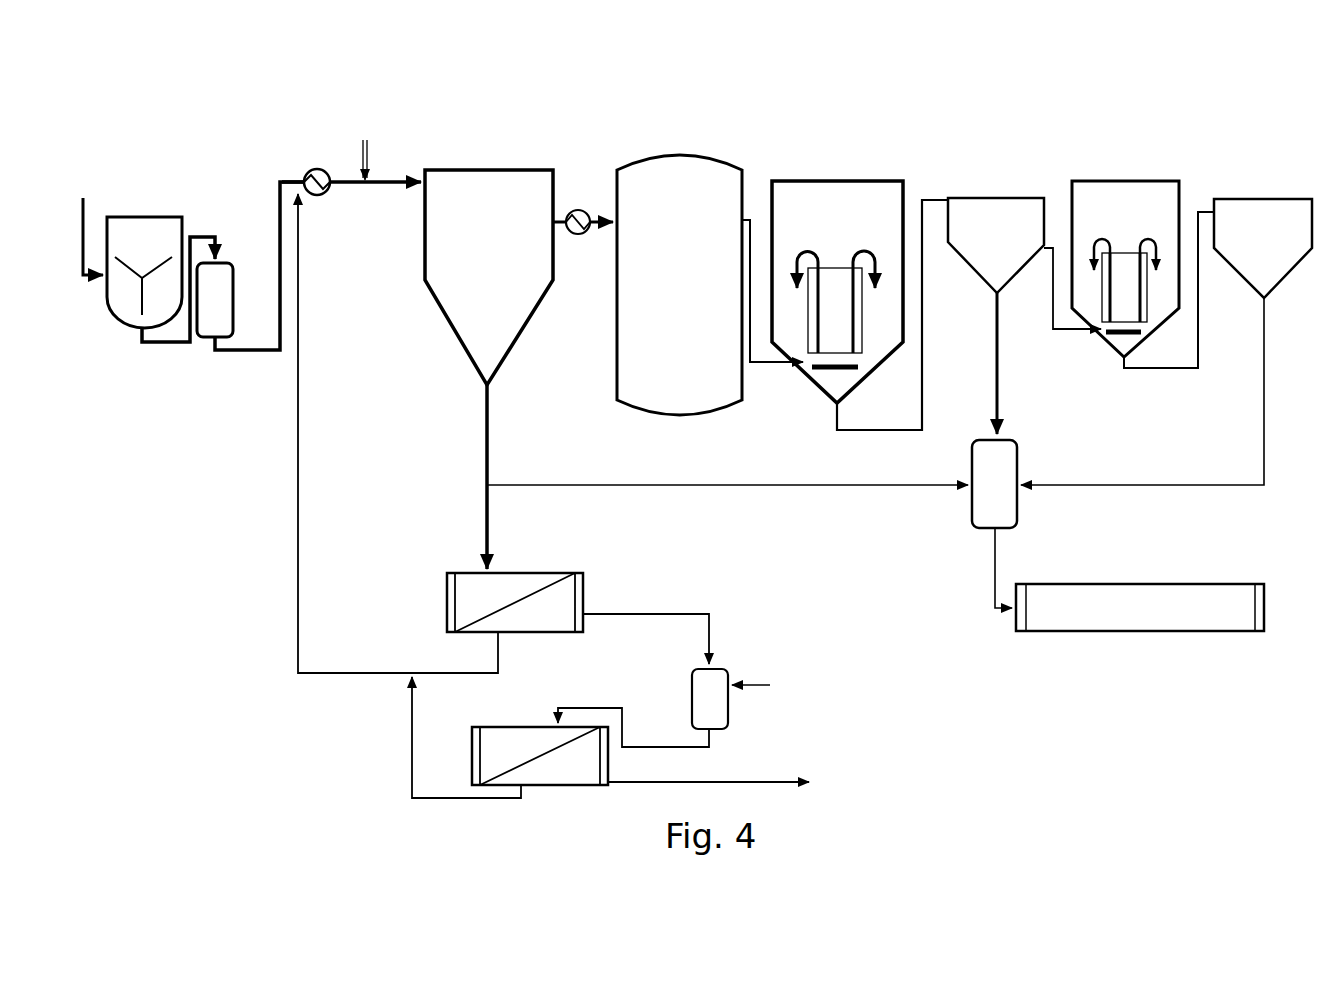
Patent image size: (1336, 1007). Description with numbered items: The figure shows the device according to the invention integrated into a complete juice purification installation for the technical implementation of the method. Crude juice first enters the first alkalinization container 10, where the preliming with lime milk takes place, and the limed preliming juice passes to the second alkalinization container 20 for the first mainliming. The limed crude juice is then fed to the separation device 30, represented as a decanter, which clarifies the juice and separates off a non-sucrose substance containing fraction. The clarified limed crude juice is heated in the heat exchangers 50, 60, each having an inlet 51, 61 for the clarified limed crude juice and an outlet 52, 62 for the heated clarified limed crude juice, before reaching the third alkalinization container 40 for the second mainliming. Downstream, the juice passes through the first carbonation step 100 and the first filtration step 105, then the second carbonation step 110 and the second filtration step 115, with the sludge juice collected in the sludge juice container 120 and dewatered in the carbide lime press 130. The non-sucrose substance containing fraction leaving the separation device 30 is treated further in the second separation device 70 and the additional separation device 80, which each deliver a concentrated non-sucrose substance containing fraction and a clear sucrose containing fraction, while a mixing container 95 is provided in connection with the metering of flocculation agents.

The first alkalinization container 10 is at (140, 233).
The second alkalinization container 20 is at (220, 280).
The separation device 30 is at (513, 208).
The third alkalinization container 40 is at (710, 182).
The heat exchanger 50 is at (318, 168).
The inlet 51 is at (300, 175).
The outlet 52 is at (330, 165).
The heat exchanger 60 is at (578, 210).
The inlet 61 is at (560, 207).
The outlet 62 is at (590, 208).
The second separation device 70 is at (512, 582).
The additional separation device 80 is at (515, 742).
The mixing container 95 is at (717, 678).
The first carbonation step 100 is at (825, 190).
The first filtration step 105 is at (1000, 208).
The second carbonation step 110 is at (1126, 197).
The second filtration step 115 is at (1265, 210).
The sludge juice container 120 is at (1007, 452).
The carbide lime press 130 is at (1083, 597).